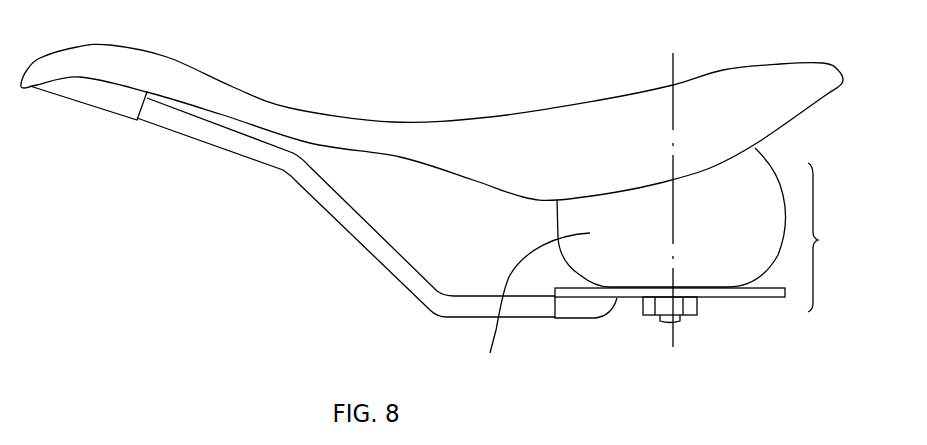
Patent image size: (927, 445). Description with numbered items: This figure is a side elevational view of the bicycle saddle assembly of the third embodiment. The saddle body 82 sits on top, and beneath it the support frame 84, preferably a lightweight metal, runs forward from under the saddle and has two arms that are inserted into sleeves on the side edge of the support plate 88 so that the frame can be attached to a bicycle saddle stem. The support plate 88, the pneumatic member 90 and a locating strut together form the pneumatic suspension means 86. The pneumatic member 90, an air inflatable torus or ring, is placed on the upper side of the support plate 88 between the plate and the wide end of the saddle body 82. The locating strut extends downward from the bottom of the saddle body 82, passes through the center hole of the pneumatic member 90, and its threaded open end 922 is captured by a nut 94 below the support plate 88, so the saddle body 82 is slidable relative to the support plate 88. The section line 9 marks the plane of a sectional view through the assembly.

The saddle body 82 is at (523, 122).
The support frame 84 is at (330, 236).
The pneumatic suspension means 86 is at (842, 242).
The support plate 88 is at (643, 291).
The pneumatic member 90 is at (533, 307).
The nut 94 is at (708, 310).
The threaded open end 922 is at (680, 321).
The section line 9- 9 is at (700, 60).